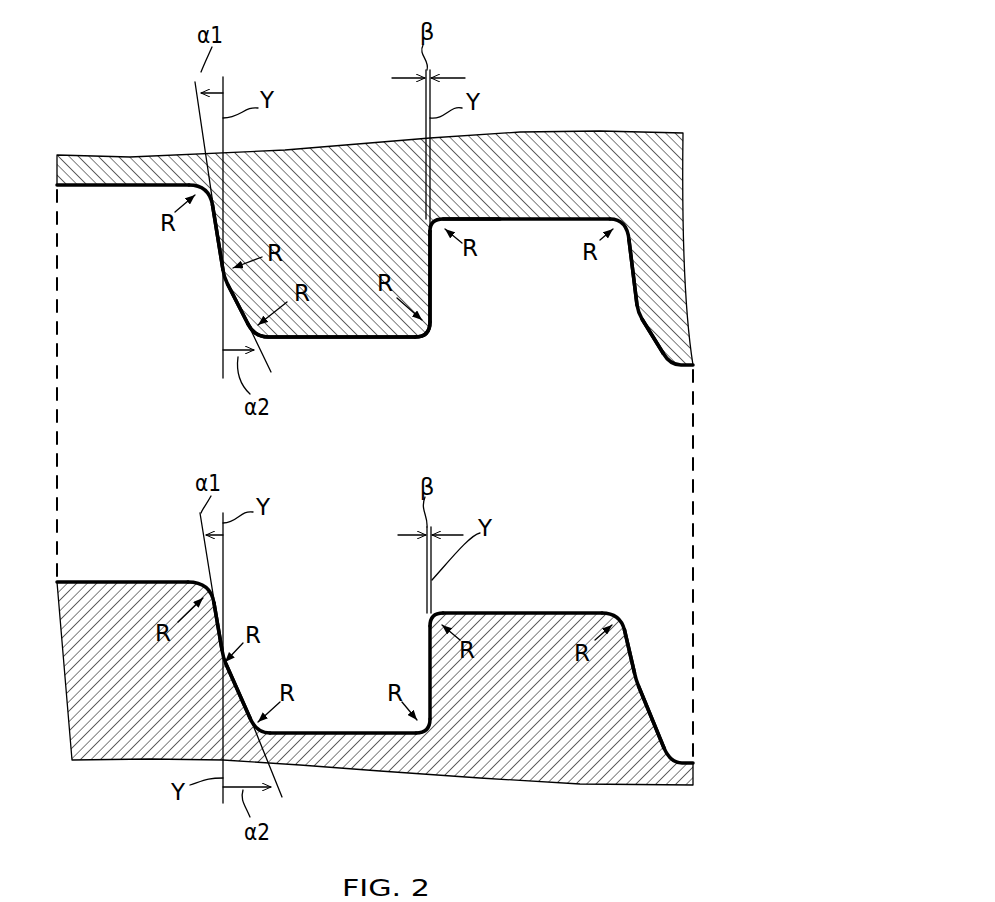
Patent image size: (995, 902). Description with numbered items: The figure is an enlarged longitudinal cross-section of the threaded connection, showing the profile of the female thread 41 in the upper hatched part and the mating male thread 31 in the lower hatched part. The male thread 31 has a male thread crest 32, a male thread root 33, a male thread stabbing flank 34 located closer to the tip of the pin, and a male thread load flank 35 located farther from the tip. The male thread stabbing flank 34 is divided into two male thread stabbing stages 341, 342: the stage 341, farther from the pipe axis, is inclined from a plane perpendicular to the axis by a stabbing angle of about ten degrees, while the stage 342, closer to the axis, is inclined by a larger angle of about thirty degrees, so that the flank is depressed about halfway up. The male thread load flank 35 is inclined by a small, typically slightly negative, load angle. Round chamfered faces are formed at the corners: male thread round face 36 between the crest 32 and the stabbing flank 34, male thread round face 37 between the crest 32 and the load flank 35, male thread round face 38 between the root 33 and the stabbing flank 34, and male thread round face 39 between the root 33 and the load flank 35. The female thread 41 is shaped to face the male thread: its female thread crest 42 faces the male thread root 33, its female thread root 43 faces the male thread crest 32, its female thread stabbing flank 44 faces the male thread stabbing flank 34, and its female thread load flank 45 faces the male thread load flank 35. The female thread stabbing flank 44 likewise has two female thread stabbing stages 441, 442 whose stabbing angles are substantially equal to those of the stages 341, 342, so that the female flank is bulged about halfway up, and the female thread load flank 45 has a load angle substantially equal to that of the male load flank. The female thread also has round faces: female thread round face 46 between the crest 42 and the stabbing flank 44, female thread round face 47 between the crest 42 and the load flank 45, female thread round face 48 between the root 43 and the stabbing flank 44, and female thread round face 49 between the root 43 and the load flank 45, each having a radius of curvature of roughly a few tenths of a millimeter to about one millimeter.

The male thread 31 is at (120, 622).
The male thread crest 32 is at (92, 580).
The male thread root 33 is at (362, 732).
The male thread stabbing flank 34 is at (258, 607).
The male thread stabbing stage 341 is at (223, 603).
The male thread stabbing stage 342 is at (238, 697).
The male thread load flank 35 is at (428, 653).
The male thread round face 36 is at (208, 590).
The male thread round face 37 is at (445, 617).
The male thread round face 38 is at (268, 728).
The male thread round face 39 is at (420, 715).
The female thread 41 is at (352, 250).
The female thread crest 42 is at (387, 338).
The female thread root 43 is at (90, 188).
The female thread stabbing flank 44 is at (173, 298).
The female thread stabbing stage 441 is at (221, 257).
The female thread stabbing stage 442 is at (241, 318).
The female thread load flank 45 is at (432, 310).
The female thread round face 46 is at (253, 334).
The female thread round face 47 is at (420, 335).
The female thread round face 48 is at (178, 187).
The female thread round face 49 is at (440, 235).